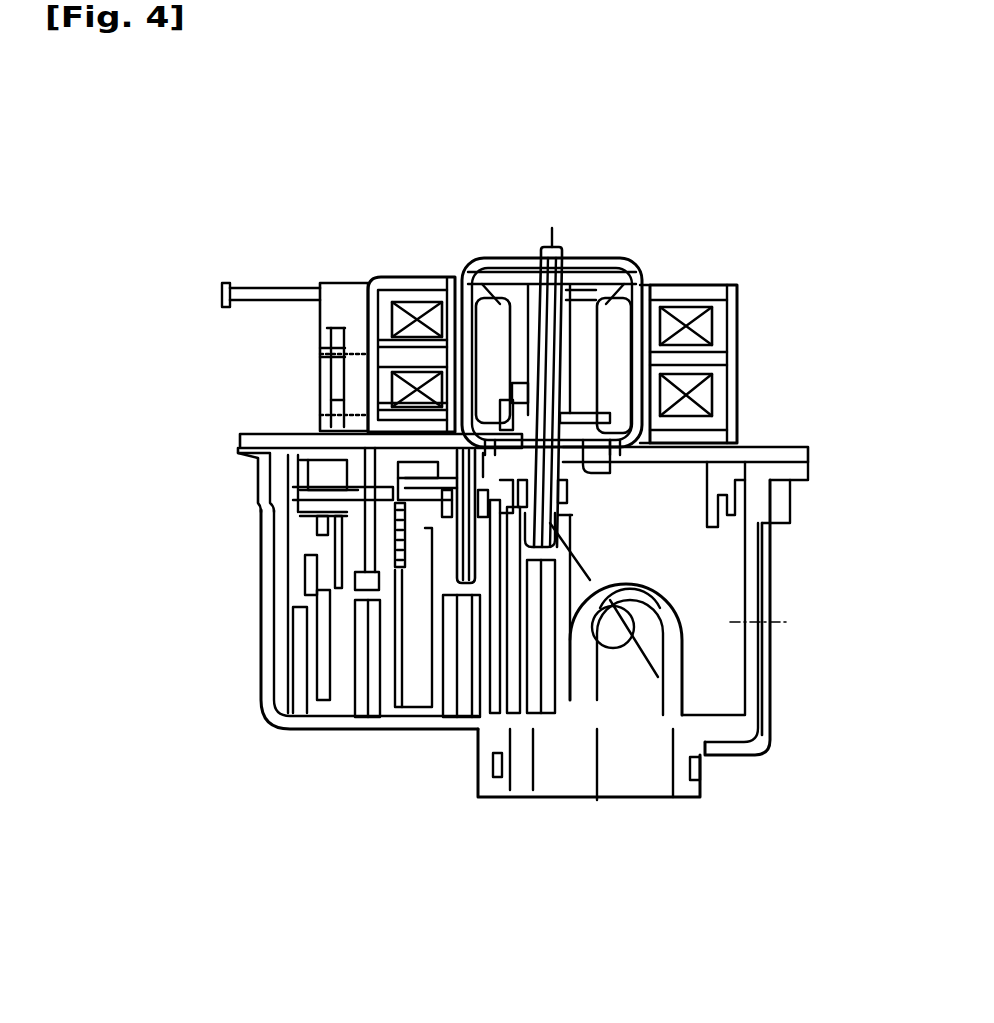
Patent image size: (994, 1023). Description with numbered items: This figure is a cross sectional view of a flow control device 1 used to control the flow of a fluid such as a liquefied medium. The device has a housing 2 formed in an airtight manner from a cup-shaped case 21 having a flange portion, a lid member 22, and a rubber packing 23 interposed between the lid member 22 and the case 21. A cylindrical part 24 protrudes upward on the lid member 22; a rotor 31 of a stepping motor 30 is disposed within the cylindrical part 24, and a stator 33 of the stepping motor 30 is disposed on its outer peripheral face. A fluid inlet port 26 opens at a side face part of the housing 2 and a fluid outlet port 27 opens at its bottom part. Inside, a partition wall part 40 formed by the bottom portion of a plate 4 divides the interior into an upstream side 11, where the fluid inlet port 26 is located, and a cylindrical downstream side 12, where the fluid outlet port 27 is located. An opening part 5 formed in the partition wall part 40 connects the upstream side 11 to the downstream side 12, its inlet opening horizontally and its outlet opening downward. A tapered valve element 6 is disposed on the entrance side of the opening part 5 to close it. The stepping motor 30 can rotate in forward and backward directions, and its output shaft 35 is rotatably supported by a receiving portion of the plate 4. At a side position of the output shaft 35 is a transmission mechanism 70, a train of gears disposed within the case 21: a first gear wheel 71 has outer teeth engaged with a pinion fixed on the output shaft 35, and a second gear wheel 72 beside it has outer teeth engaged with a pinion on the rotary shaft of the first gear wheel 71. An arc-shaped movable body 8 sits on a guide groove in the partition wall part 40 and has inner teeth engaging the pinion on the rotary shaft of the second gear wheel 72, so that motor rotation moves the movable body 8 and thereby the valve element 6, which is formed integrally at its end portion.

The flow control device 1 is at (690, 205).
The housing 2 is at (434, 628).
The plate 4 is at (425, 705).
The opening part 5 is at (635, 600).
The valve element 6 is at (627, 620).
The movable body 8 is at (262, 597).
The upstream side 11 is at (703, 658).
The downstream side 12 is at (667, 782).
The case 21 is at (260, 506).
The lid member 22 is at (236, 431).
The rubber packing 23 is at (240, 450).
The cylindrical part 24 is at (598, 292).
The fluid inlet port 26 is at (772, 605).
The fluid outlet port 27 is at (630, 788).
The stepping motor 30 is at (655, 56).
The rotor 31 is at (595, 300).
The stator 33 is at (672, 285).
The output shaft 35 is at (658, 672).
The partition wall part 40 is at (555, 725).
The transmission mechanism 70 is at (304, 720).
The first gear wheel 71 is at (457, 518).
The second gear wheel 72 is at (348, 572).